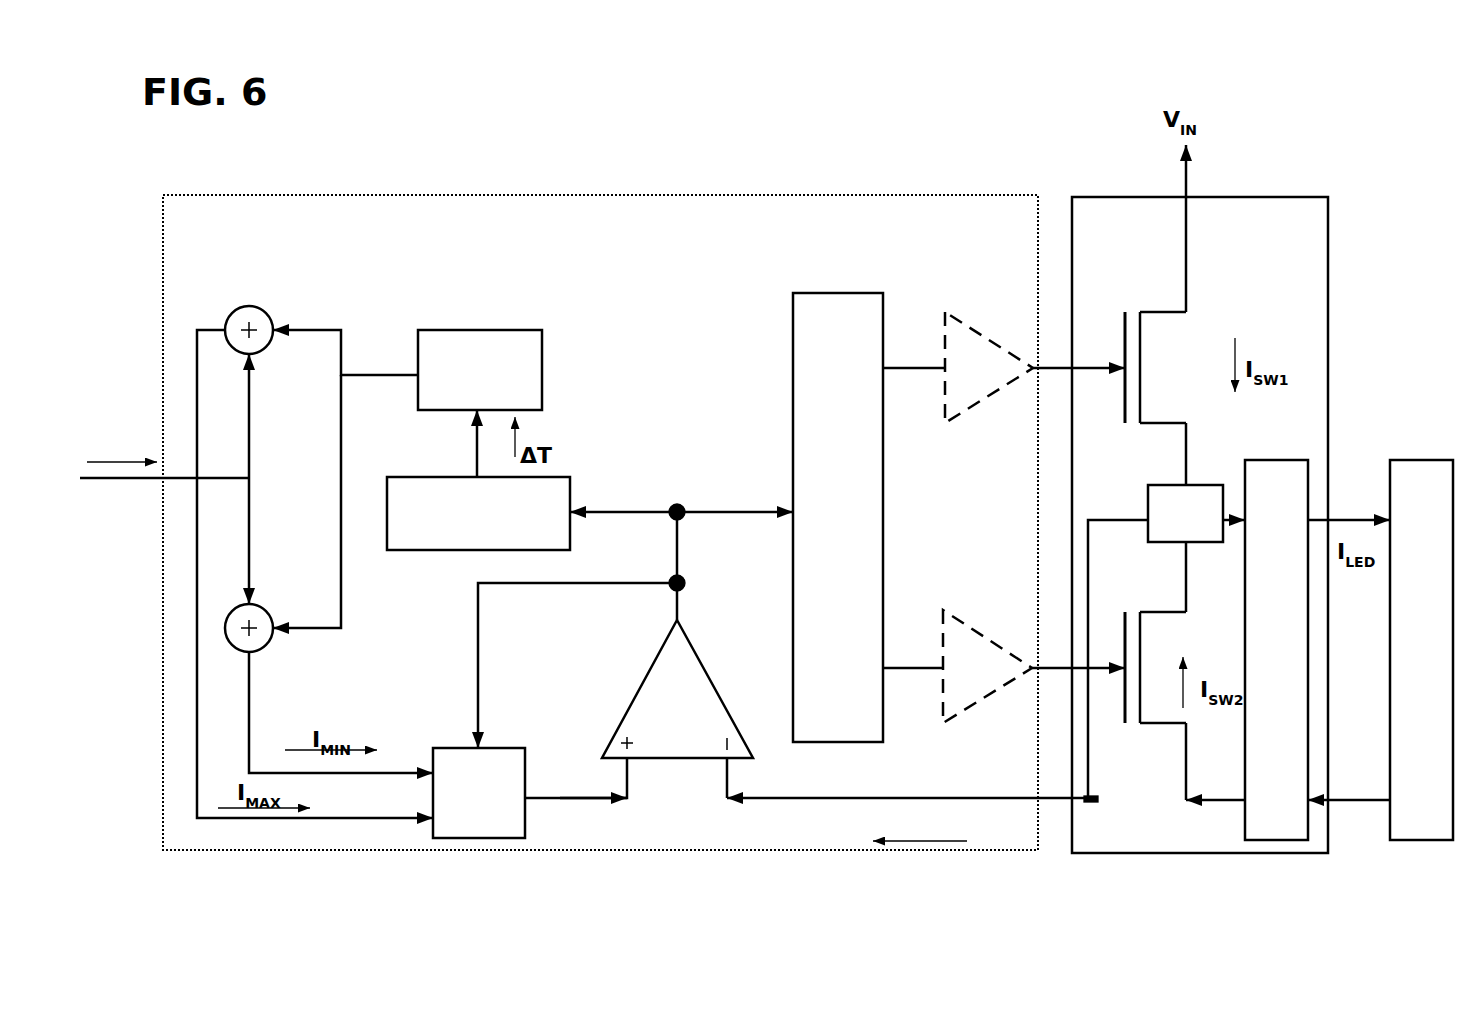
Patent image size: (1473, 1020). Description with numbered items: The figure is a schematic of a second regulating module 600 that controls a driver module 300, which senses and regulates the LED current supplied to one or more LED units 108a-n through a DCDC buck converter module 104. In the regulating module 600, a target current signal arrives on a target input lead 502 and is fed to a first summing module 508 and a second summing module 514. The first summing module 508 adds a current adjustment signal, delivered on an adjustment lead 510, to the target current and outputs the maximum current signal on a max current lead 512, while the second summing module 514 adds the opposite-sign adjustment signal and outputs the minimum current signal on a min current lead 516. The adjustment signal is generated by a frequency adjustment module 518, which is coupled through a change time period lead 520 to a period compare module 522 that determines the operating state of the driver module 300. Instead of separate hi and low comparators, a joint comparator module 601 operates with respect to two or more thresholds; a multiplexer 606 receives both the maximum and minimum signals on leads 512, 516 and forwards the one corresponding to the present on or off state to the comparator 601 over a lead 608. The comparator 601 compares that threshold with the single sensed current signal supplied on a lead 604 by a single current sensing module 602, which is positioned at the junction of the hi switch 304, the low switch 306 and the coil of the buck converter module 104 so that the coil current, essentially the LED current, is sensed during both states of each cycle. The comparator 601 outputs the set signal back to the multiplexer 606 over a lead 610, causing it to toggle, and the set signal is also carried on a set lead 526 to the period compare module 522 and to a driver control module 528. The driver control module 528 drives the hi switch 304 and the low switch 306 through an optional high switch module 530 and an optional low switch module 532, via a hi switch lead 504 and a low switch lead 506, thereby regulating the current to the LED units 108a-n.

The second regulating module 600 is at (600, 522).
The driver module 300 is at (1200, 525).
The target input lead 502 is at (117, 468).
The first summing module 508 is at (254, 314).
The second summing module 514 is at (233, 625).
The max current lead 512 is at (207, 372).
The min current lead 516 is at (265, 732).
The adjustment lead 510 is at (390, 402).
The frequency adjustment module 518 is at (480, 370).
The change time period lead 520 is at (480, 458).
The period compare module 522 is at (478, 513).
The set lead 526 is at (613, 513).
The driver control module 528 is at (838, 517).
The high switch module 530 is at (958, 367).
The low switch module 532 is at (957, 666).
The hi switch lead 504 is at (1093, 350).
The low switch lead 506 is at (1060, 680).
The joint comparator module 601 is at (677, 689).
The multiplexer 606 is at (479, 793).
The lead 608 is at (548, 808).
The lead 610 is at (458, 667).
The single current sensing module 602 is at (1166, 641).
The lead 604 is at (1002, 815).
The hi switch 304 is at (1157, 367).
The low switch 306 is at (1156, 671).
The DCDC buck converter module 104 is at (1276, 650).
The LED units 108a-n is at (1421, 650).